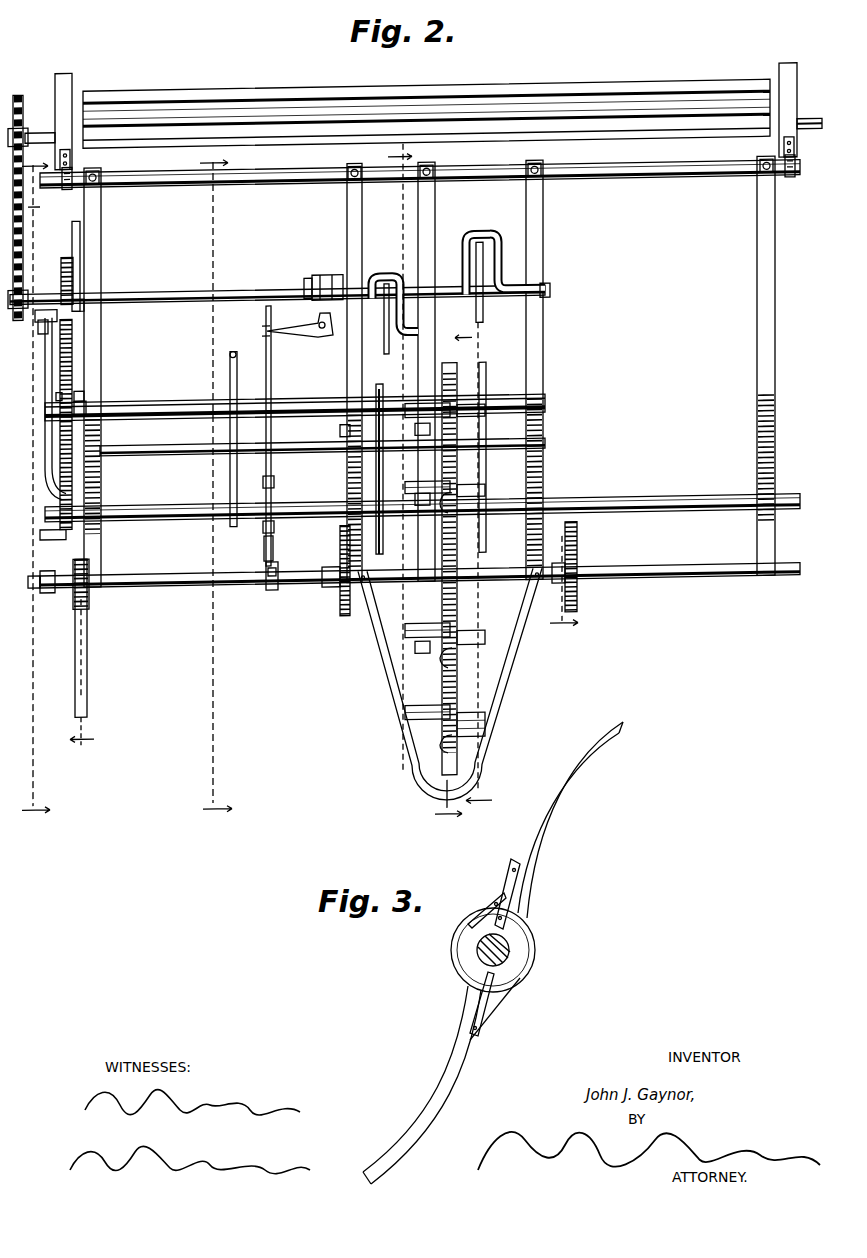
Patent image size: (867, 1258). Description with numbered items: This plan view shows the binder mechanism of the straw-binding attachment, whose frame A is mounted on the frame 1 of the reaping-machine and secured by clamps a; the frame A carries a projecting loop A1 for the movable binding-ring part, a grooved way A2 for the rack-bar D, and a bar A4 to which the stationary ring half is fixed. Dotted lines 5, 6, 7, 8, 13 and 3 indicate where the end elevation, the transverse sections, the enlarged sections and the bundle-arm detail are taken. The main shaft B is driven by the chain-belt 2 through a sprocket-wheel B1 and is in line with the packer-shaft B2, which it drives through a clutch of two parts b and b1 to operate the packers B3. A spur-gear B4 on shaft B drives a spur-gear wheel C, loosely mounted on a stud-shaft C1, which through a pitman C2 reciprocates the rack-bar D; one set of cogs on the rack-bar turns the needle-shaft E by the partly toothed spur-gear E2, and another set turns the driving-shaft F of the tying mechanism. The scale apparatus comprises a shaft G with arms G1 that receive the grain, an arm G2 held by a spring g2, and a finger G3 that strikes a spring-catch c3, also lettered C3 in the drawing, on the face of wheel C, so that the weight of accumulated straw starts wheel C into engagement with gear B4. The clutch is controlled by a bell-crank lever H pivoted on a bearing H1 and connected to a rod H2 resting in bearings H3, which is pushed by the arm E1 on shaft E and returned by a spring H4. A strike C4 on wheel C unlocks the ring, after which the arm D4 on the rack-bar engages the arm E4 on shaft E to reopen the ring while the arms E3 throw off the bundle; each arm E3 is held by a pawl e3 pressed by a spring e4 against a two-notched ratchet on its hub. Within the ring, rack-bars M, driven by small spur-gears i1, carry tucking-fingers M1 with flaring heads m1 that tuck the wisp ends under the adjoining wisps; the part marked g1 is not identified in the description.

In FIG. 2, the frame of the reaping-machine 1 is at (40, 133).
In FIG. 2, the chain-belt 2 is at (38, 207).
In FIG. 2, the dotted line 3 3 is at (564, 590).
In FIG. 2, the dotted line 5 5 is at (36, 490).
In FIG. 2, the dotted line 6 6 is at (216, 488).
In FIG. 2, the dotted line 7 7 is at (425, 486).
In FIG. 2, the dotted line 8 8 is at (82, 739).
In FIG. 2, the dotted line 13 13 is at (473, 570).
In FIG. 2, the clamps a is at (72, 176).
In FIG. 2, the frame A is at (272, 185).
In FIG. 2, the projecting loop A1 is at (388, 690).
In FIG. 2, the grooved way A2 is at (84, 660).
In FIG. 2, the bar A4 is at (420, 202).
In FIG. 2, the main shaft B is at (165, 294).
In FIG. 2, the sprocket-wheel B1 is at (24, 258).
In FIG. 2, the packer-shaft B2 is at (376, 288).
In FIG. 2, the packers B3 is at (476, 310).
In FIG. 2, the spur-gear B4 is at (56, 281).
In FIG. 2, the shifting clutch part b is at (305, 290).
In FIG. 2, the stationary clutch part b1 is at (332, 280).
In FIG. 2, the spur-gear wheel C is at (62, 455).
In FIG. 2, the stud-shaft C1 is at (216, 437).
In FIG. 2, the pitman C2 is at (50, 440).
In FIG. 2, the spring-catch C3 is at (80, 392).
In FIG. 2, the strike C4 is at (72, 358).
In FIG. 2, the spring-catch c3 is at (58, 396).
In FIG. 2, the rack-bar D is at (78, 270).
In FIG. 2, the arm D4 is at (53, 545).
In FIG. 2, the needle-shaft E is at (243, 588).
In FIG. 3, the needle-shaft E is at (505, 945).
In FIG. 2, the arm E1 is at (266, 576).
In FIG. 2, the spur-gear E2 is at (90, 602).
In FIG. 2, the arms E3 is at (340, 598).
In FIG. 3, the arms E3 is at (566, 775).
In FIG. 2, the arm E4 is at (50, 594).
In FIG. 3, the pawl e3 is at (470, 918).
In FIG. 3, the spring e4 is at (512, 868).
In FIG. 2, the driving-shaft F is at (172, 457).
In FIG. 2, the shaft G is at (146, 403).
In FIG. 2, the arms G1 is at (486, 478).
In FIG. 2, the arm G2 is at (237, 375).
In FIG. 2, the finger G3 is at (86, 400).
In FIG. 2, the collar g1 is at (344, 443).
In FIG. 2, the spring g2 is at (230, 357).
In FIG. 2, the bell-crank lever H is at (316, 325).
In FIG. 2, the bearing H1 is at (332, 330).
In FIG. 2, the rod H2 is at (272, 370).
In FIG. 2, the bearings H3 is at (275, 486).
In FIG. 2, the spring H4 is at (264, 532).
In FIG. 2, the rack-bars M is at (430, 418).
In FIG. 2, the tucking-fingers M1 is at (417, 546).
In FIG. 2, the flaring heads m1 is at (475, 412).
In FIG. 2, the small spur-gears i1 is at (428, 750).